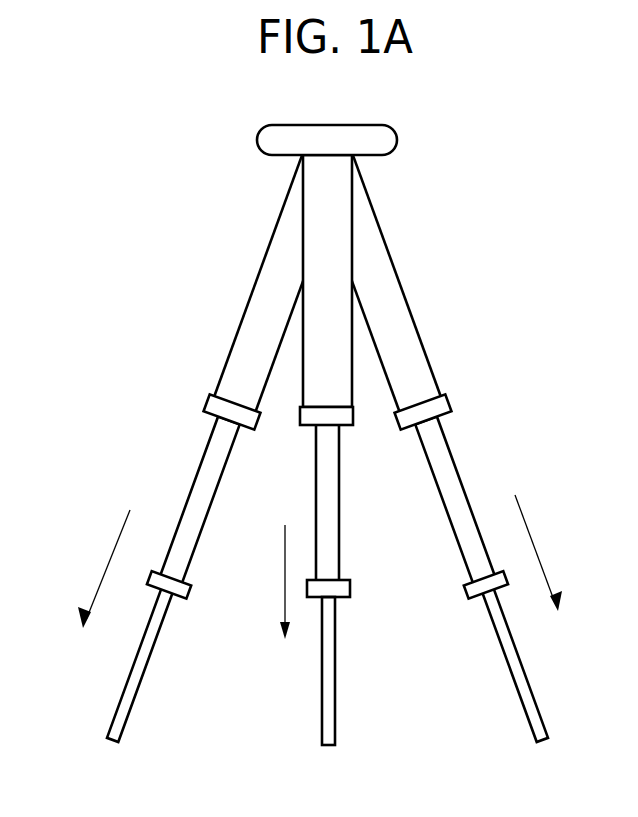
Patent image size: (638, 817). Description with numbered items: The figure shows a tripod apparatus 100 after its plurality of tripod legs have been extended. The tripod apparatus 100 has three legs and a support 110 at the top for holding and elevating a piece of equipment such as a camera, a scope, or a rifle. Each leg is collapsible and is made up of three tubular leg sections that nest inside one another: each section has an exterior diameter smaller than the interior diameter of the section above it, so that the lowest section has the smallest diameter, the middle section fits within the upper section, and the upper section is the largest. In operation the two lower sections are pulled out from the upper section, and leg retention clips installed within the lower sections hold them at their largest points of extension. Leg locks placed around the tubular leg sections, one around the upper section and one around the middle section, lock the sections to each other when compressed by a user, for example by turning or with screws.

The tripod apparatus 100 is at (60, 106).
The support 110 is at (347, 125).